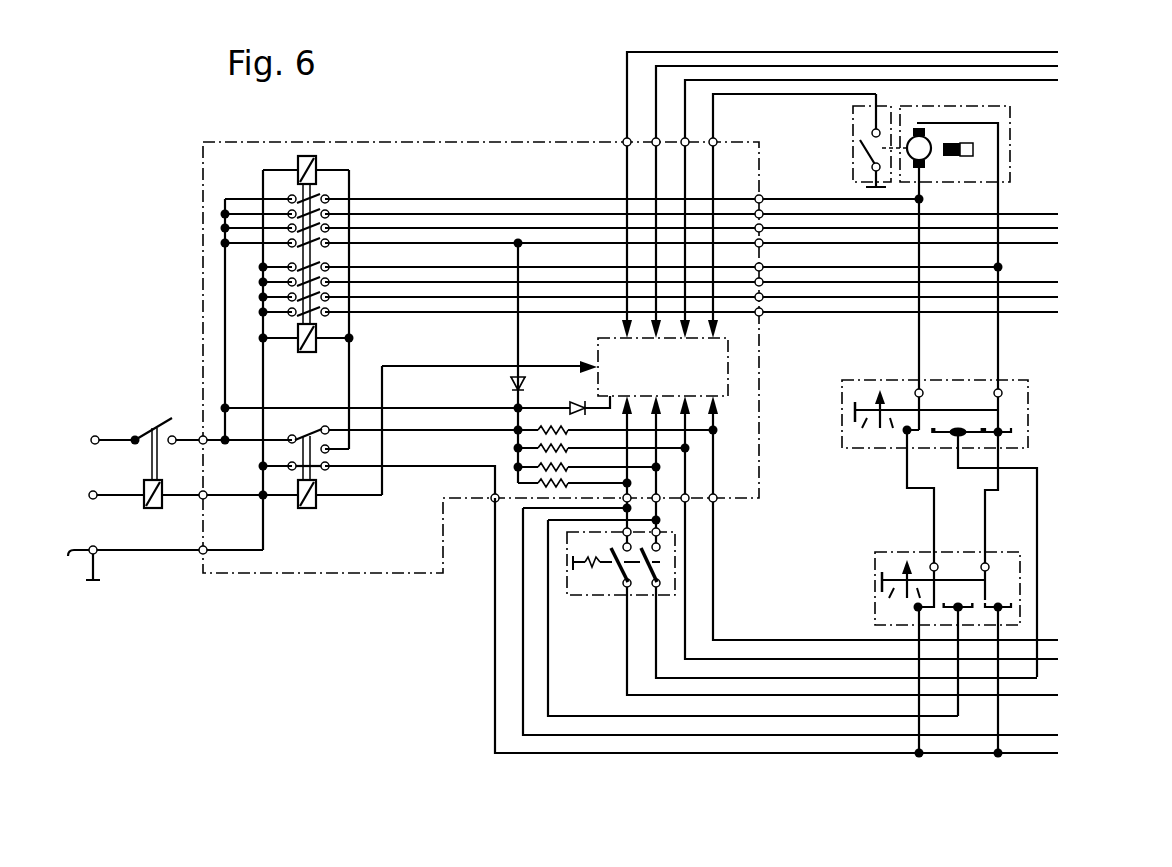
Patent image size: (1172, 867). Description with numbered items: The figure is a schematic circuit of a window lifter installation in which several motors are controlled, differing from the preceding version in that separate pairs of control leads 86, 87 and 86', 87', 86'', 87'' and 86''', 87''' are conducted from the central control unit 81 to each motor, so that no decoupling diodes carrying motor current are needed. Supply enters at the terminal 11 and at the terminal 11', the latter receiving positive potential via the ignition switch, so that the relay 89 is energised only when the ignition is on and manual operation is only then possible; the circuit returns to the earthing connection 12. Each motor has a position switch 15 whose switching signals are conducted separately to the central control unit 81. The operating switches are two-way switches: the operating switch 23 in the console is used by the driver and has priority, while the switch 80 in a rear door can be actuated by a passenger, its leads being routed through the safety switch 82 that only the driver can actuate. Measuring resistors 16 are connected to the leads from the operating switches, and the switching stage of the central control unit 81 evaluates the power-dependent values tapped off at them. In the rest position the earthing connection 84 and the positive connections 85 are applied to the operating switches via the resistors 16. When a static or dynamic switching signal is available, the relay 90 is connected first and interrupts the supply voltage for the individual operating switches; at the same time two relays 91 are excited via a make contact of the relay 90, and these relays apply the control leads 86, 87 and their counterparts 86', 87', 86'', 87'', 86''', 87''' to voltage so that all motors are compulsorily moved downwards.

The terminal 11 is at (187, 438).
The terminal 11' is at (79, 475).
The earthing connection 12 is at (159, 566).
The position switch 15 is at (844, 150).
The measuring resistor 16 is at (535, 465).
The operating switch 23 is at (1015, 592).
The switch 80 is at (1020, 405).
The central control unit 81 is at (750, 372).
The safety switch 82 is at (586, 598).
The earthing connection 84 is at (495, 610).
The positive connections 85 is at (760, 696).
The control lead 86 is at (572, 179).
The control lead 86' is at (641, 187).
The control lead 86'' is at (663, 205).
The control lead 86''' is at (668, 255).
The control lead 87 is at (630, 254).
The control lead 87' is at (660, 268).
The control lead 87'' is at (685, 298).
The control lead 87''' is at (683, 332).
The relay 89 is at (160, 500).
The relay 90 is at (307, 508).
The relay 91 is at (316, 160).